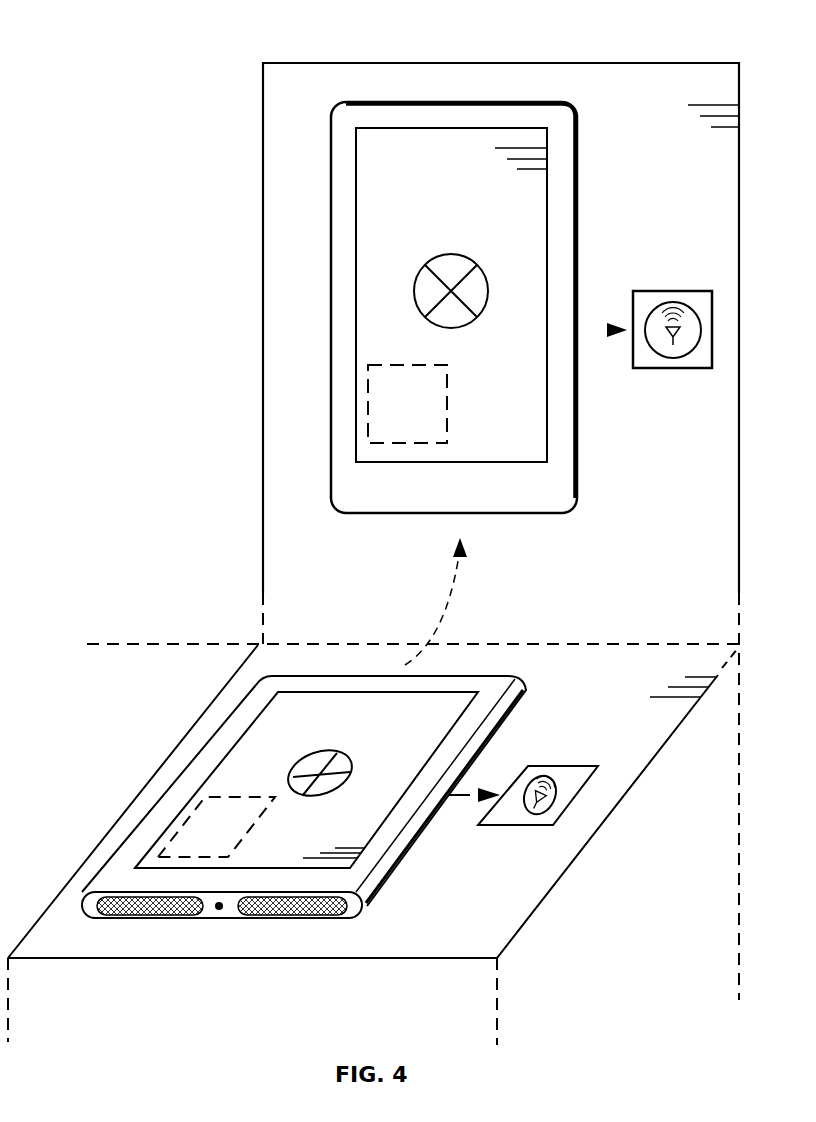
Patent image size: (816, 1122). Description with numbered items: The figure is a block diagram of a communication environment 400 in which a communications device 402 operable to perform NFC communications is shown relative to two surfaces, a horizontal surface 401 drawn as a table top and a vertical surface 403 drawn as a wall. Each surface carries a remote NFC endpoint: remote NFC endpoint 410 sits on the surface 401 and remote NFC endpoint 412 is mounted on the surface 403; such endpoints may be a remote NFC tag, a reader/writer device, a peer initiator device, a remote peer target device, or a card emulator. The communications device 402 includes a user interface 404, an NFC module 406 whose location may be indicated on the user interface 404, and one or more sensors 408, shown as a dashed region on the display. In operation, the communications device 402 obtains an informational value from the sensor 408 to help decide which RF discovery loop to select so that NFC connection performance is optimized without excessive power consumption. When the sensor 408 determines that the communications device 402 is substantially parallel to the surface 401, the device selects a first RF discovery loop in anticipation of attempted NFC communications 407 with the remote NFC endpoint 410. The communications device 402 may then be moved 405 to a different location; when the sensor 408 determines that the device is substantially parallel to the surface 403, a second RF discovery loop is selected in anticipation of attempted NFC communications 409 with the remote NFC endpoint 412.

The communication environment 400 is at (120, 98).
The surface 401 is at (514, 914).
The communications device 402 is at (331, 250).
The surface 403 is at (650, 72).
The user interface 404 is at (355, 323).
The movement of communications device 405 is at (455, 600).
The NFC module 406 is at (453, 254).
The attempted NFC communications 407 is at (452, 797).
The sensor 408 is at (447, 398).
The attempted NFC communications 409 is at (598, 330).
The remote NFC endpoint 410 is at (558, 765).
The remote NFC endpoint 412 is at (667, 290).